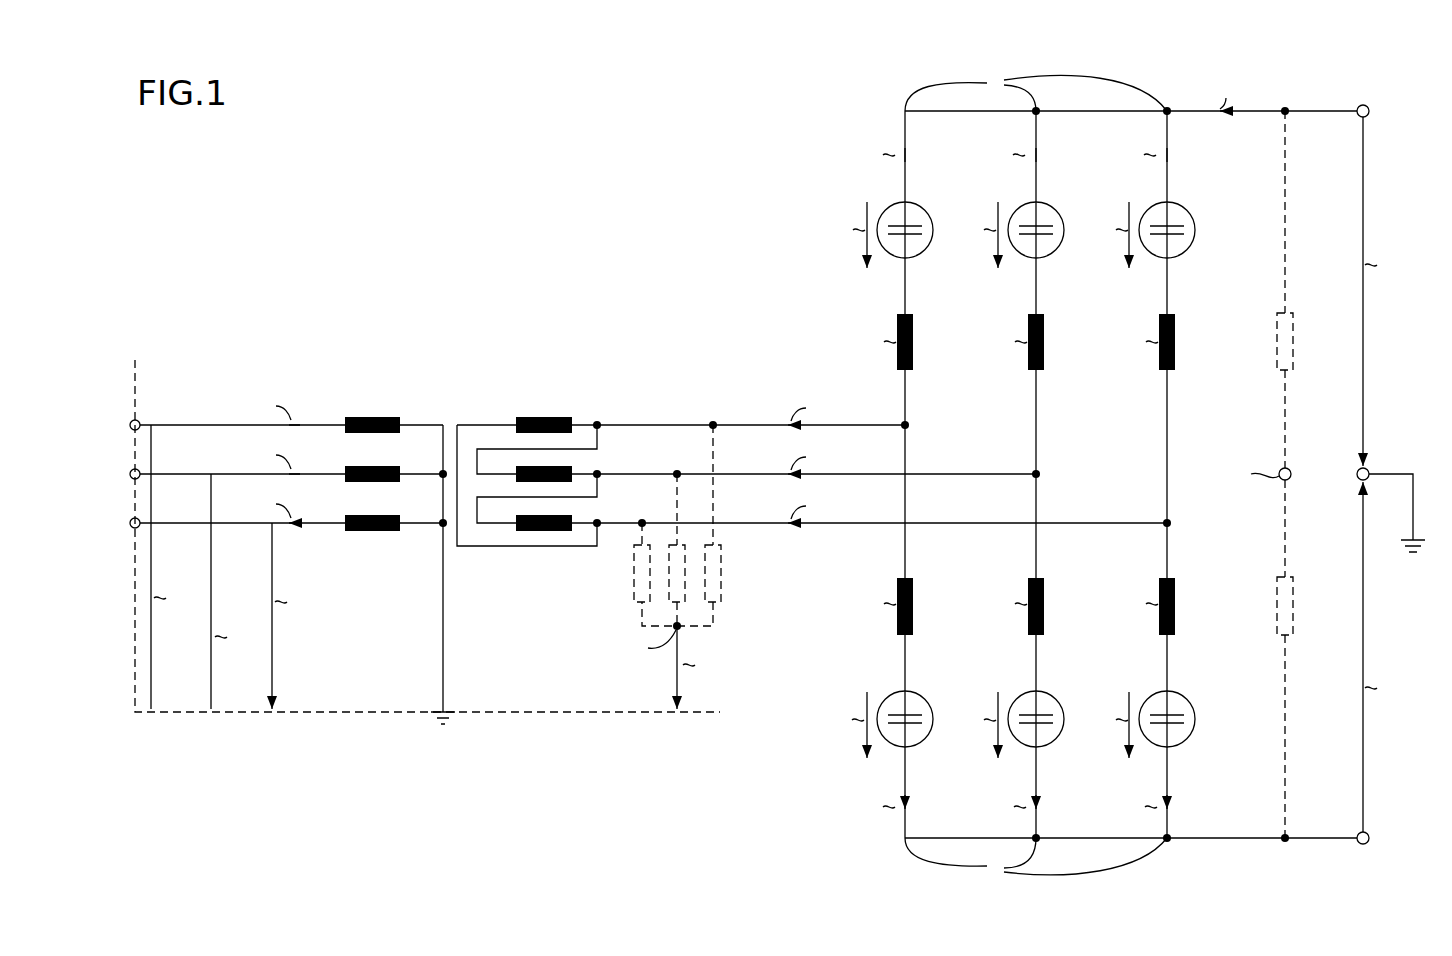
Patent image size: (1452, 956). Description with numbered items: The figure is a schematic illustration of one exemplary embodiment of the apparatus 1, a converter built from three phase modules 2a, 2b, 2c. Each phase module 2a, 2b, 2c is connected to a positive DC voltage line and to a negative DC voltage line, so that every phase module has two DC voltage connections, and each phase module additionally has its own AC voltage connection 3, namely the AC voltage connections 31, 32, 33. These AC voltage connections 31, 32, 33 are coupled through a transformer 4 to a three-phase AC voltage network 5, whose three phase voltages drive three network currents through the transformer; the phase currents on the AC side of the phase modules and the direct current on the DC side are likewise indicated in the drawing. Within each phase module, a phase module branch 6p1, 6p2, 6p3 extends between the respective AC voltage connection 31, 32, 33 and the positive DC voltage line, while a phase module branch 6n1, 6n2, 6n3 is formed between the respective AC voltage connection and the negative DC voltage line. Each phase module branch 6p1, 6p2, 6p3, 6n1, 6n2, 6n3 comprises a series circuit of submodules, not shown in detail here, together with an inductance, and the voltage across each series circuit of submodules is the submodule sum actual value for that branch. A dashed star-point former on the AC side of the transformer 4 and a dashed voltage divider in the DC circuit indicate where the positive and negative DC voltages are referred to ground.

The apparatus 1 is at (765, 160).
The phase module 2a is at (786, 333).
The phase module 2b is at (1052, 72).
The phase module 2c is at (1176, 91).
The AC voltage connection 3 is at (1004, 474).
The AC voltage connection 31 is at (909, 427).
The AC voltage connection 32 is at (1040, 476).
The AC voltage connection 33 is at (1171, 525).
The transformer 4 is at (453, 403).
The three-phase AC voltage network 5 is at (216, 338).
The phase module branch 6p1 is at (920, 265).
The phase module branch 6p2 is at (1051, 265).
The phase module branch 6p3 is at (1182, 265).
The phase module branch 6n1 is at (920, 687).
The phase module branch 6n2 is at (1051, 687).
The phase module branch 6n3 is at (1183, 687).